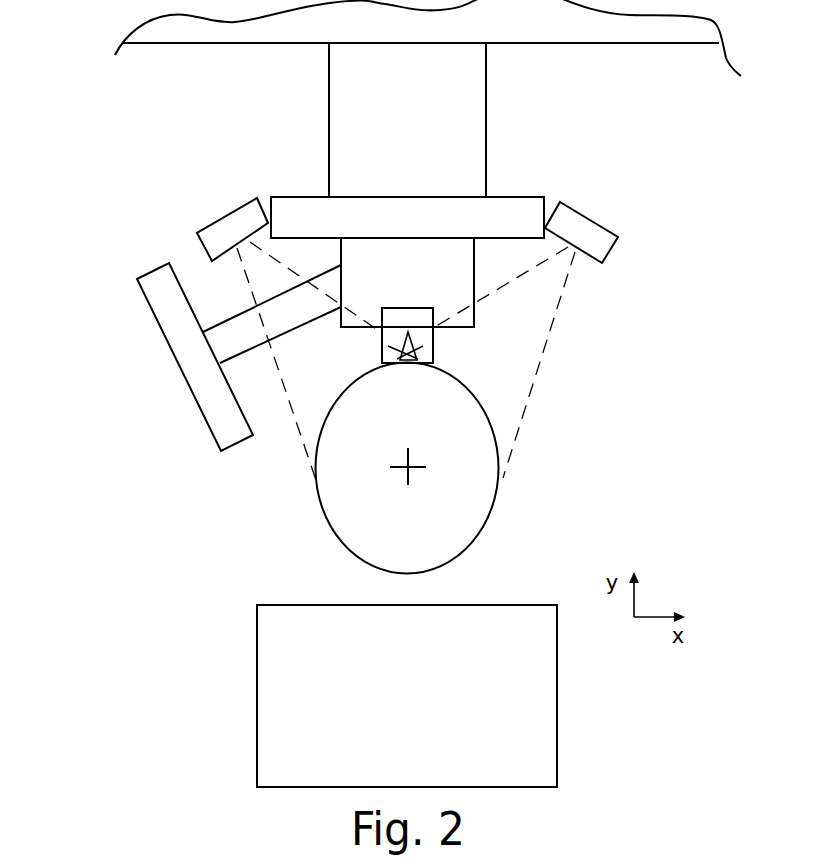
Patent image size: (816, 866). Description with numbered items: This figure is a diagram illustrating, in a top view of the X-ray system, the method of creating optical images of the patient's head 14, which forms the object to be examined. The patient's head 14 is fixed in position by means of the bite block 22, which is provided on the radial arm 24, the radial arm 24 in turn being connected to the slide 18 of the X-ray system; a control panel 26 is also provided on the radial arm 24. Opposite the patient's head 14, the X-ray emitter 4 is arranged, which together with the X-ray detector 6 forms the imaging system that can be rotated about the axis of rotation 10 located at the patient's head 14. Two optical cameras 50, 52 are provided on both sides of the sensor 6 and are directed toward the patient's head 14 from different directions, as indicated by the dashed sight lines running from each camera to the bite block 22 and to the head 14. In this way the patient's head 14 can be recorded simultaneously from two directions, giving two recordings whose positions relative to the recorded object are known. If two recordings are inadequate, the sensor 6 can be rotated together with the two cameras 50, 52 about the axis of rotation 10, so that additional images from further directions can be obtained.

The slide 18 is at (694, 34).
The radial arm 24 is at (353, 78).
The X-ray detector 6 is at (414, 211).
The optical camera 52 is at (587, 230).
The optical camera 50 is at (218, 229).
The control panel 26 is at (177, 328).
The bite block 22 is at (425, 330).
The patient's head 14 is at (487, 457).
The axis of rotation 10 is at (390, 467).
The X-ray emitter 4 is at (548, 719).